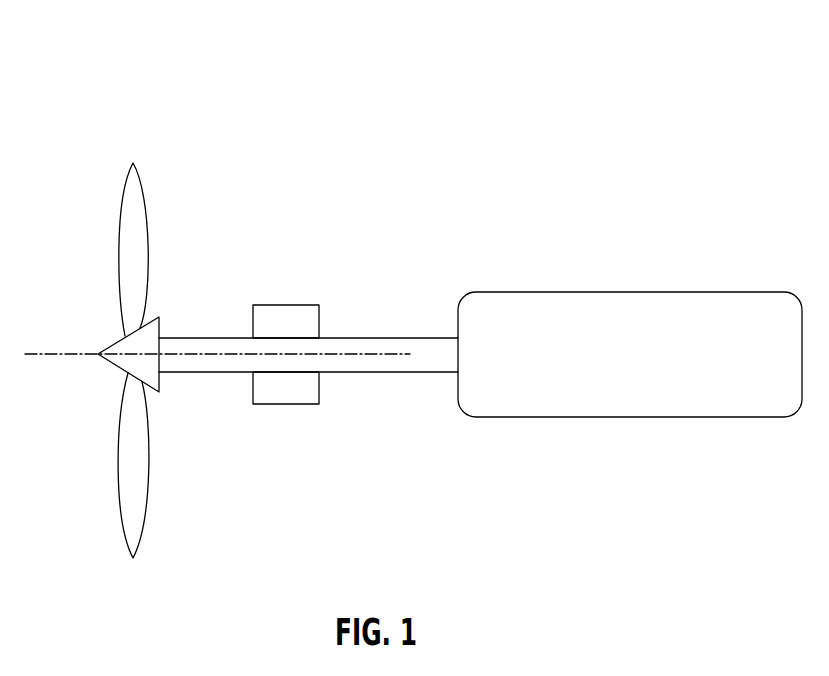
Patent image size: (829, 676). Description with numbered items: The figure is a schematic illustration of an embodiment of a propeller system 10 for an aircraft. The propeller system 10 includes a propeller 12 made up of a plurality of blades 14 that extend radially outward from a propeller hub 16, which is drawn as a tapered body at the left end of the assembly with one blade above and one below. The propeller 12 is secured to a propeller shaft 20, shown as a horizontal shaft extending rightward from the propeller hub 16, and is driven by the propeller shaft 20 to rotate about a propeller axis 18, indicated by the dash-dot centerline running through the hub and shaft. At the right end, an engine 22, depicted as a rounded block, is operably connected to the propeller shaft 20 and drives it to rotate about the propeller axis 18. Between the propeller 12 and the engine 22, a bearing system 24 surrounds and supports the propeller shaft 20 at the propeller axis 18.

The propeller system 10 is at (92, 65).
The propeller 12 is at (128, 360).
The blades 14 is at (136, 200).
The propeller hub 16 is at (123, 363).
The propeller axis 18 is at (50, 352).
The propeller shaft 20 is at (375, 337).
The engine 22 is at (645, 368).
The bearing system 24 is at (287, 405).